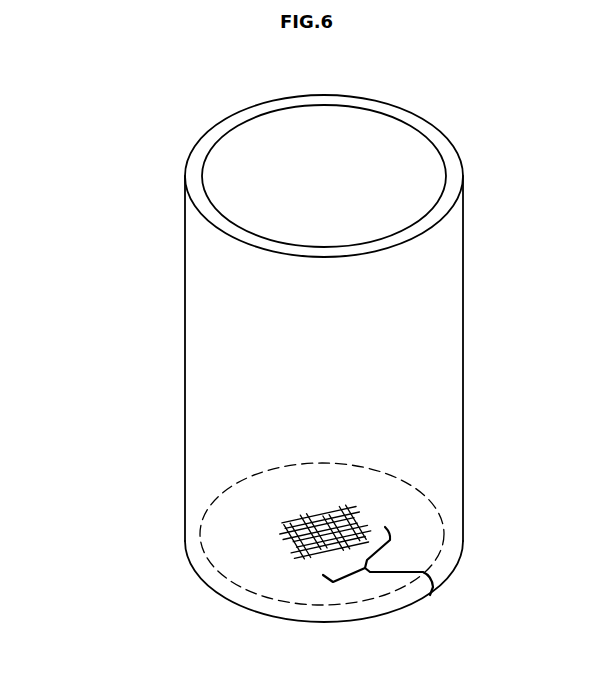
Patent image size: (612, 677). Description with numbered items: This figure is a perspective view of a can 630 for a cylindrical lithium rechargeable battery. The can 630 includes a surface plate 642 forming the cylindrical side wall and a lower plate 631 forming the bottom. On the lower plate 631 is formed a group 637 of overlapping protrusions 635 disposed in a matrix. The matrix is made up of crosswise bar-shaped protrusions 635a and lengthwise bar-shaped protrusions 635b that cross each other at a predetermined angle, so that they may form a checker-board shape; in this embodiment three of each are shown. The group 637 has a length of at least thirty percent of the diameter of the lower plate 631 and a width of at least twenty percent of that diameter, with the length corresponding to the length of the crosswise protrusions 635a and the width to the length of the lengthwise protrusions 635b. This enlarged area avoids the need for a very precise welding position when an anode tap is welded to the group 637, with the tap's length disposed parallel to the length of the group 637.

The can 630 is at (344, 358).
The surface plate 642 is at (200, 323).
The lower plate 631 is at (281, 478).
The protrusions 635 is at (195, 505).
The crosswise bar-shaped protrusion 635a is at (307, 515).
The lengthwise bar-shaped protrusion 635b is at (292, 532).
The group of protrusions 637 is at (430, 595).